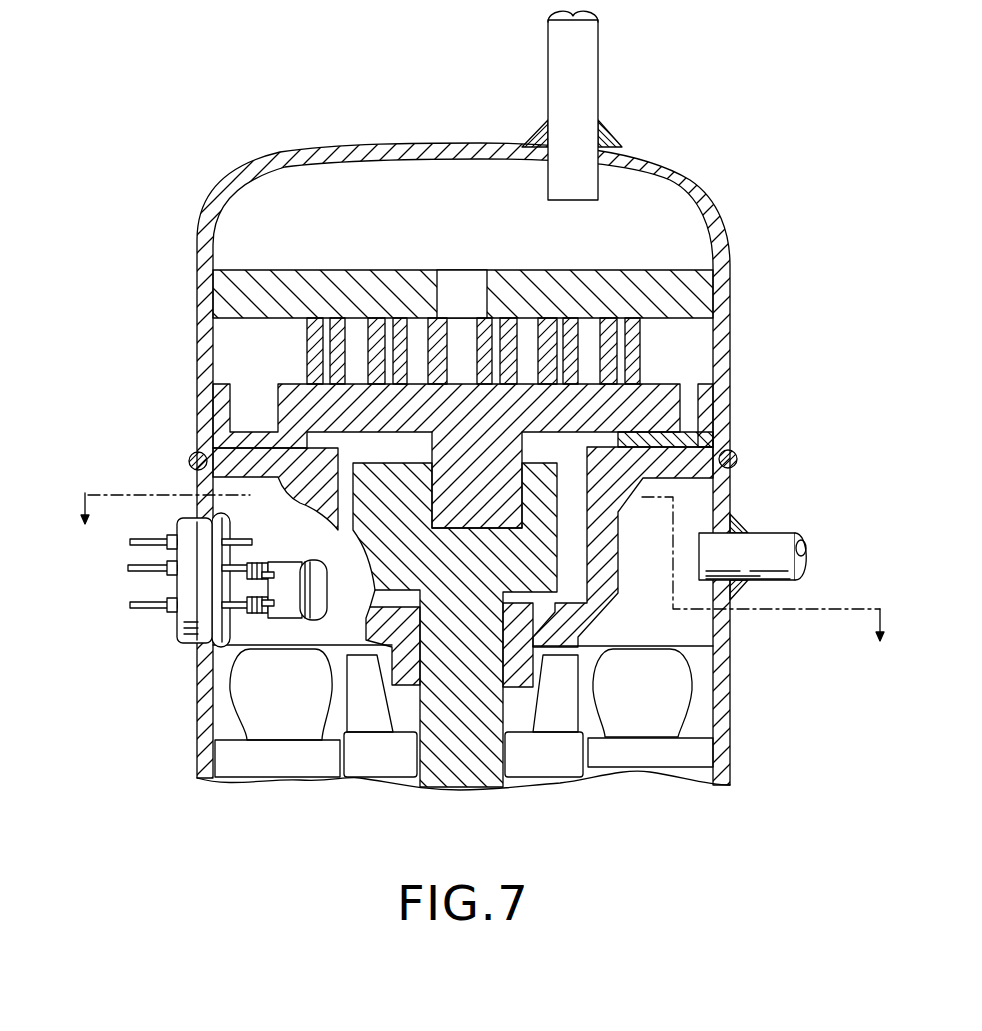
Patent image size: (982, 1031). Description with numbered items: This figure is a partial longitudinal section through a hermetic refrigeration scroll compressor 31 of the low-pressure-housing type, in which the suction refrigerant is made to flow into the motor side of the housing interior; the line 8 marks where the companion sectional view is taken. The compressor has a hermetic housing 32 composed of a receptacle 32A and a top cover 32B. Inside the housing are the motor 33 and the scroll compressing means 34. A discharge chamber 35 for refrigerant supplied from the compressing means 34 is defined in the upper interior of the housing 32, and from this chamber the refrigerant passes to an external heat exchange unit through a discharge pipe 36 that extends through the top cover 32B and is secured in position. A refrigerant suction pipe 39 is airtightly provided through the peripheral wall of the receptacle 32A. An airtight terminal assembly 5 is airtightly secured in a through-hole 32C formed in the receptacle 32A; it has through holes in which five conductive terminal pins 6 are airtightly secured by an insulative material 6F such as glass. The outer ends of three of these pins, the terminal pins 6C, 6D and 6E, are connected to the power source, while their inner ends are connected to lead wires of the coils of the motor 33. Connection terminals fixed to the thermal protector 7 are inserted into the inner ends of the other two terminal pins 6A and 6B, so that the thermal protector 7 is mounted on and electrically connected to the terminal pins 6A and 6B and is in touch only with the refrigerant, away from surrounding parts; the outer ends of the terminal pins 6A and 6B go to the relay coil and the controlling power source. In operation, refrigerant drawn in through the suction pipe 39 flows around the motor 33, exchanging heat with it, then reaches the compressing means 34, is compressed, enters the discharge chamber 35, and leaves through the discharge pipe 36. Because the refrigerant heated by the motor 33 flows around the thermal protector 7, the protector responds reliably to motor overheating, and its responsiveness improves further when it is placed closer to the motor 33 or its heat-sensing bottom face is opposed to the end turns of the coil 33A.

The hermetic refrigeration scroll compressor 31 is at (735, 189).
The discharge chamber 35 is at (345, 205).
The discharge pipe 36 is at (582, 104).
The scroll compressing means 34 is at (660, 347).
The top cover 32B is at (728, 392).
The receptacle 32A is at (732, 483).
The hermetic housing 32 is at (733, 497).
The through-hole 32C is at (198, 668).
The refrigerant suction pipe 39 is at (782, 546).
The coil 33A is at (672, 675).
The motor 33 is at (678, 753).
The airtight terminal assembly 5 is at (188, 637).
The conductive terminal pins 6 is at (155, 576).
The terminal pin 6A is at (140, 612).
The terminal pin 6B is at (143, 563).
The terminal pin 6C is at (142, 543).
The terminal pin 6D is at (130, 569).
The terminal pin 6E is at (142, 612).
The insulative material 6F is at (177, 538).
The thermal protector 7 is at (304, 562).
The section line 8— 8 is at (480, 550).